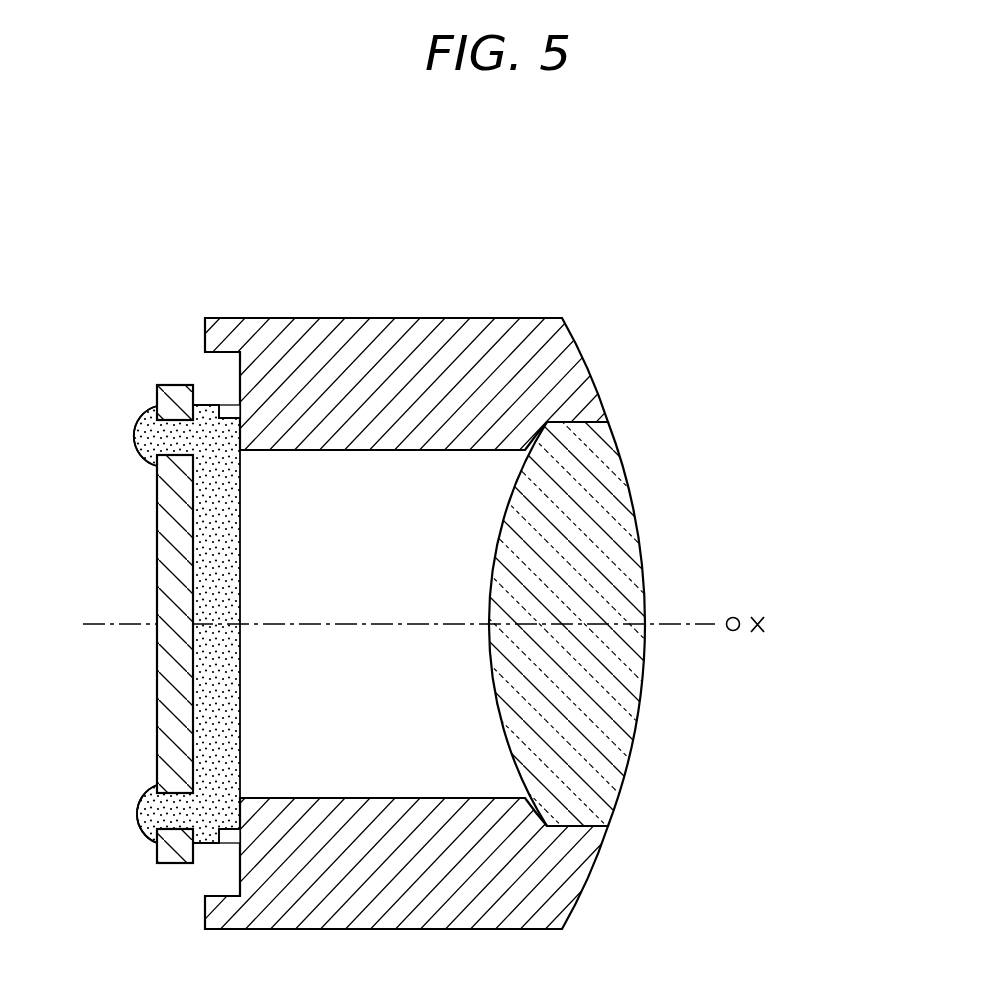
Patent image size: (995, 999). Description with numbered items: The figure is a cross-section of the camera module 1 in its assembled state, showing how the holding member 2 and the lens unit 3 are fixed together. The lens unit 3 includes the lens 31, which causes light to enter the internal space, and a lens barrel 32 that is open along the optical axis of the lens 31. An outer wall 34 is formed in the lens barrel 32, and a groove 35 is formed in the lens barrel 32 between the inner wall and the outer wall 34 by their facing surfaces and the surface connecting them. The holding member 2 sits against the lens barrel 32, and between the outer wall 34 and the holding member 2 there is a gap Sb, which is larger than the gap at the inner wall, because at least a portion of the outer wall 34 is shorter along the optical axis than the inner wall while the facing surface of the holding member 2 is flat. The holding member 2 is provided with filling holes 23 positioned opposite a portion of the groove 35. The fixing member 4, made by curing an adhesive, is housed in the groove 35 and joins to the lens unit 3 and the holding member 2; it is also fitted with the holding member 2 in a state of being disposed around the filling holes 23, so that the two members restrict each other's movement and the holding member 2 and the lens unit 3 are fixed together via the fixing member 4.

The camera module 1 is at (628, 333).
The holding member 2 is at (158, 562).
The lens unit 3 is at (588, 880).
The fixing member 4 is at (138, 420).
The filling holes 23 is at (178, 437).
The lens 31 is at (618, 695).
The lens barrel 32 is at (402, 362).
The outer wall 34 is at (223, 409).
The groove 35 is at (223, 582).
The gap Sb is at (206, 405).